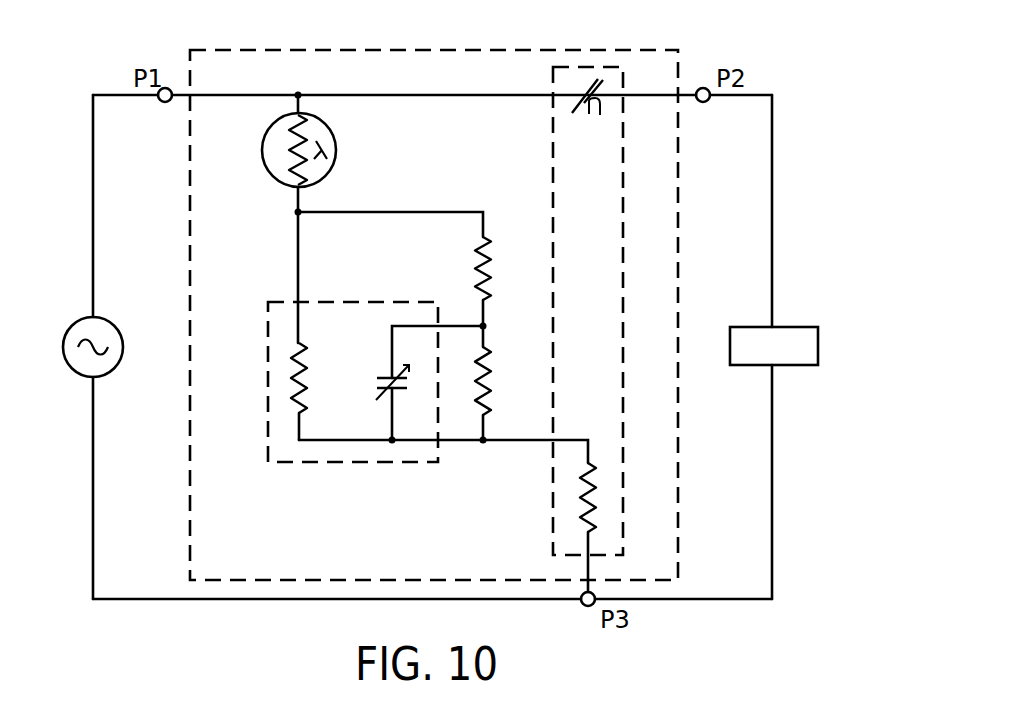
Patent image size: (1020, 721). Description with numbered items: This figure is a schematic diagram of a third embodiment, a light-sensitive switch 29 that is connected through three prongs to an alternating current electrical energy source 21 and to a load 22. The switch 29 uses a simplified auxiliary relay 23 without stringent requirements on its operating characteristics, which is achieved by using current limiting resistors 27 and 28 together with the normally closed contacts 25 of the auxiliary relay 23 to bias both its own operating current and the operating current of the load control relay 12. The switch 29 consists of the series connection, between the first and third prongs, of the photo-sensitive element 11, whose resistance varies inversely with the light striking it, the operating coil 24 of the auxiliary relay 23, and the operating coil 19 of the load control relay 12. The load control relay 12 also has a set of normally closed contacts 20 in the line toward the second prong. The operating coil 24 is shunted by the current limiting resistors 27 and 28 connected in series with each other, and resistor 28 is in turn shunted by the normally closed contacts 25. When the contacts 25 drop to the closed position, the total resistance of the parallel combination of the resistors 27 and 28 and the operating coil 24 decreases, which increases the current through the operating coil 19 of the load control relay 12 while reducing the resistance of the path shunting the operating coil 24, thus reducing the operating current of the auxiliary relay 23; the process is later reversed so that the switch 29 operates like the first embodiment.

The photo-sensitive element 11 is at (326, 123).
The load control relay 12 is at (623, 242).
The operating coil of the load control relay 19 is at (592, 464).
The normally closed contacts 20 is at (593, 110).
The alternating current electrical energy source 21 is at (114, 328).
The load 22 is at (804, 327).
The auxiliary relay 23 is at (268, 413).
The operating coil of the auxiliary relay 24 is at (305, 346).
The normally closed contacts of the auxiliary relay 25 is at (382, 378).
The current limiting resistor 27 is at (485, 238).
The current limiting resistor 28 is at (487, 348).
The light-sensitive switch 29 is at (678, 215).